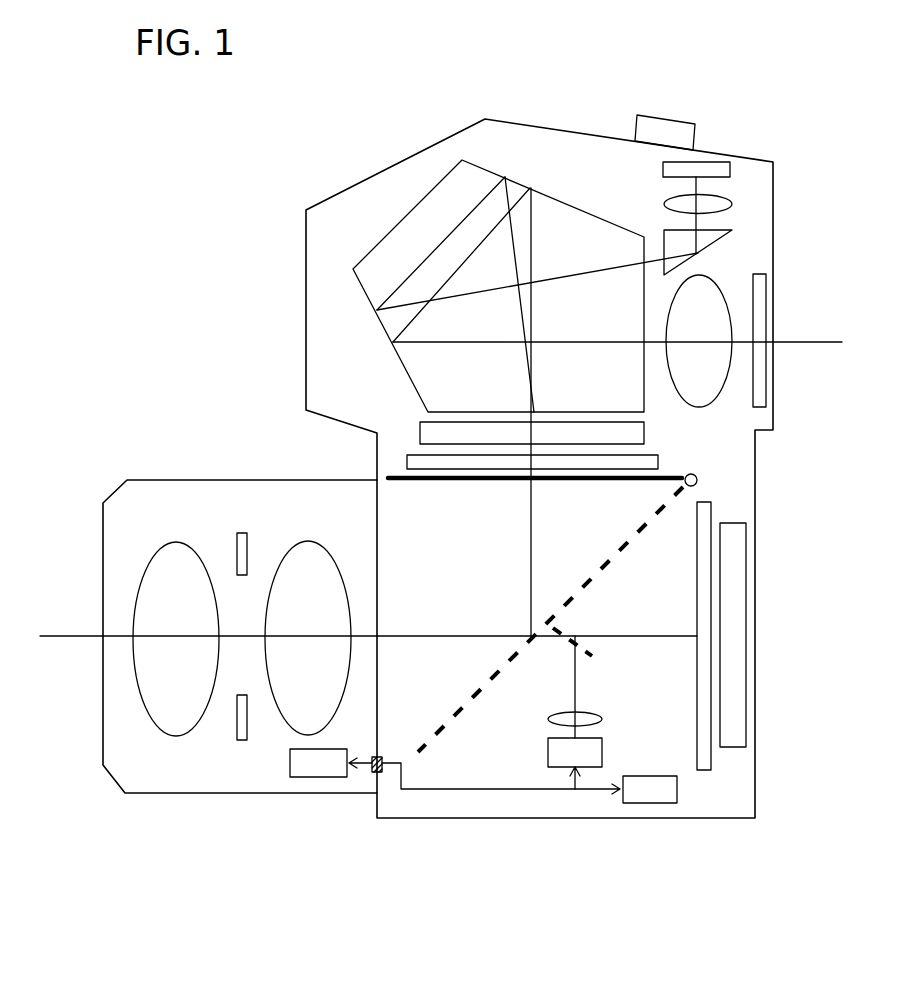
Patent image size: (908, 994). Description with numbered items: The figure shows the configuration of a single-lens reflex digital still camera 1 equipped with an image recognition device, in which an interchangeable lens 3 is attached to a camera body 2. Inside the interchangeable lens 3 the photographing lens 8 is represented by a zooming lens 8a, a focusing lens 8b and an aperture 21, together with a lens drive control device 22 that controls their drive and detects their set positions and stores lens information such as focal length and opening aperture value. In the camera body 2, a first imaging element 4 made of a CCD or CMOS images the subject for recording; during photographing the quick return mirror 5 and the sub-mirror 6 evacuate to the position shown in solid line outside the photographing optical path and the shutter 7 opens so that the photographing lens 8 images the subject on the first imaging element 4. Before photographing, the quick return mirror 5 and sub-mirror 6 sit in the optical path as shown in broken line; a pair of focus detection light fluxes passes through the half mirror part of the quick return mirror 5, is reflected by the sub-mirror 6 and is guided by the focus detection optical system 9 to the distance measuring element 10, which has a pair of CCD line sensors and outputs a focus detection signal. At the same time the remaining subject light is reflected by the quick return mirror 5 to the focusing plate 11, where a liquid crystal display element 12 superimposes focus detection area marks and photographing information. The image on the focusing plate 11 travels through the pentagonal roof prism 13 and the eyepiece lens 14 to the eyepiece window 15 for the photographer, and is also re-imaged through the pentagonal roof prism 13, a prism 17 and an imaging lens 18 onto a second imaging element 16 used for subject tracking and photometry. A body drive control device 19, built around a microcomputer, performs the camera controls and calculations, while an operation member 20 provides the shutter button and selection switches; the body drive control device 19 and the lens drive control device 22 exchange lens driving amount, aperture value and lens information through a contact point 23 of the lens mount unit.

The camera 1 is at (539, 477).
The camera body 2 is at (485, 818).
The interchangeable lens 3 is at (228, 793).
The first imaging element 4 is at (742, 702).
The quick return mirror 5 is at (458, 717).
The sub-mirror 6 is at (587, 652).
The shutter 7 is at (712, 570).
The photographing lens 8 is at (242, 541).
The zooming lens 8a is at (177, 540).
The focusing lens 8b is at (300, 540).
The focus detection optical system 9 is at (590, 717).
The distance measuring element 10 is at (598, 747).
The focusing plate 11 is at (643, 437).
The liquid crystal display element 12 is at (658, 462).
The pentagonal roof prism 13 is at (572, 233).
The eyepiece lens 14 is at (718, 358).
The eyepiece window 15 is at (763, 300).
The second imaging element 16 is at (715, 162).
The prism 17 is at (712, 239).
The imaging lens 18 is at (718, 205).
The body drive control device 19 is at (650, 803).
The operation member 20 is at (663, 118).
The aperture 21 is at (237, 727).
The lens drive control device 22 is at (322, 777).
The contact point 23 is at (380, 762).